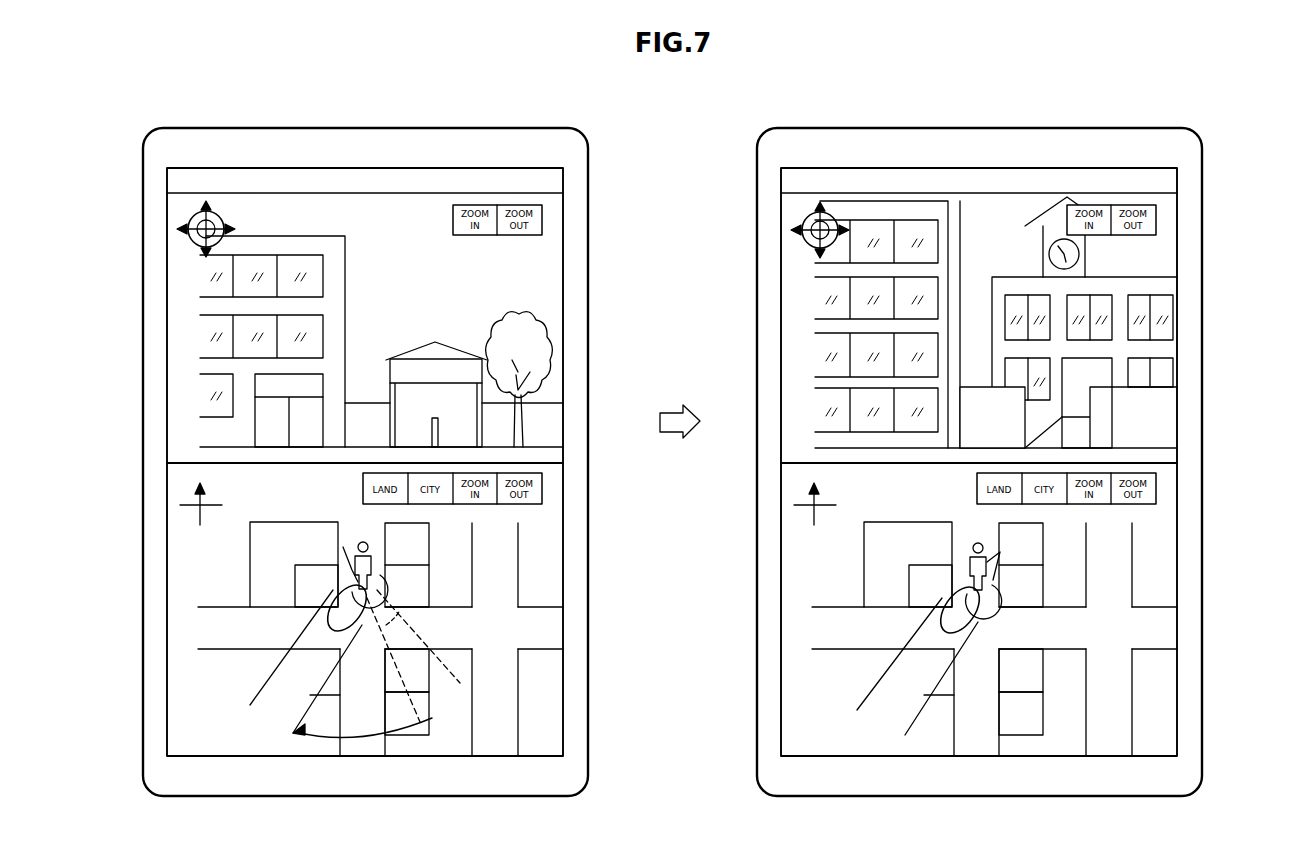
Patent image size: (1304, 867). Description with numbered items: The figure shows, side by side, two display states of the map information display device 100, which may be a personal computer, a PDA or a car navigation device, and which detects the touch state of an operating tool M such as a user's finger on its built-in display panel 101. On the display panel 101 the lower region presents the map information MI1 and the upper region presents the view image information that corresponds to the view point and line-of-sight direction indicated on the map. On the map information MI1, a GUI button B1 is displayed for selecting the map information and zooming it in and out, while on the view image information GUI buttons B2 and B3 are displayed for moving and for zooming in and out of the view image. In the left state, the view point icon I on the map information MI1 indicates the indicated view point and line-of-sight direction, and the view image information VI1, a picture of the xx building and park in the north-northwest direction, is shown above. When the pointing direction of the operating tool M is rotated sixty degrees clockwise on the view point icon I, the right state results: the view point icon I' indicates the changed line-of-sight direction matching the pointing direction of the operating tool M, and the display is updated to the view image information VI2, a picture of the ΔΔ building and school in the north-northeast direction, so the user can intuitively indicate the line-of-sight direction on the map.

The map information display device 100 is at (537, 128).
The display panel 101 is at (551, 168).
The GUI button B2 is at (188, 222).
The GUI button B3 is at (543, 217).
The view image information VI1 is at (546, 272).
The view image information VI2 is at (1160, 272).
The GUI button B1 is at (543, 490).
The map information MI1 is at (548, 521).
The view point icon I is at (284, 640).
The view point icon I' is at (861, 581).
The operating tool M is at (250, 695).